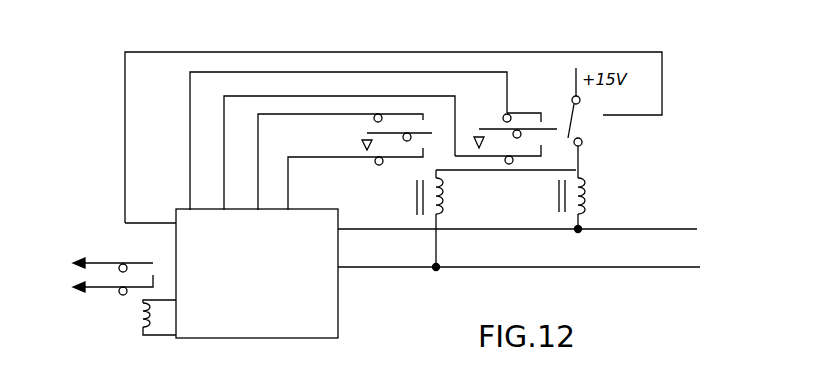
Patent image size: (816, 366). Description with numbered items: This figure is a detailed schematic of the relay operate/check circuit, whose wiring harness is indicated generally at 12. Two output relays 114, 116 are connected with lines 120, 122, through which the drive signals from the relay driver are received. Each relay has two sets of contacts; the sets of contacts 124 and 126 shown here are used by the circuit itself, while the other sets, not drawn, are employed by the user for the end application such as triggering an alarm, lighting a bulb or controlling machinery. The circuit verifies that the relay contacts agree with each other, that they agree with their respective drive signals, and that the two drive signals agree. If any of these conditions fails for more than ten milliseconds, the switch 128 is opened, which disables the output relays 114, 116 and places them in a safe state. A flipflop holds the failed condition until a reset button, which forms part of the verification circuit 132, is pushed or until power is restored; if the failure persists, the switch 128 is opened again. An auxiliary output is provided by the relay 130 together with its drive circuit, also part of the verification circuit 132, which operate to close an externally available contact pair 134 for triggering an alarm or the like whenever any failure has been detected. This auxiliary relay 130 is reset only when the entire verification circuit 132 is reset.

The cable / bus wiring 12 is at (395, 50).
The output relay 114 is at (447, 190).
The output relay 116 is at (590, 183).
The line 120 is at (637, 268).
The line 122 is at (665, 228).
The set of contacts 124 is at (400, 163).
The set of contacts 126 is at (515, 108).
The switch 128 is at (587, 120).
The relay 130 is at (127, 313).
The verification circuit 132 is at (338, 309).
The contact pair 134 is at (148, 262).